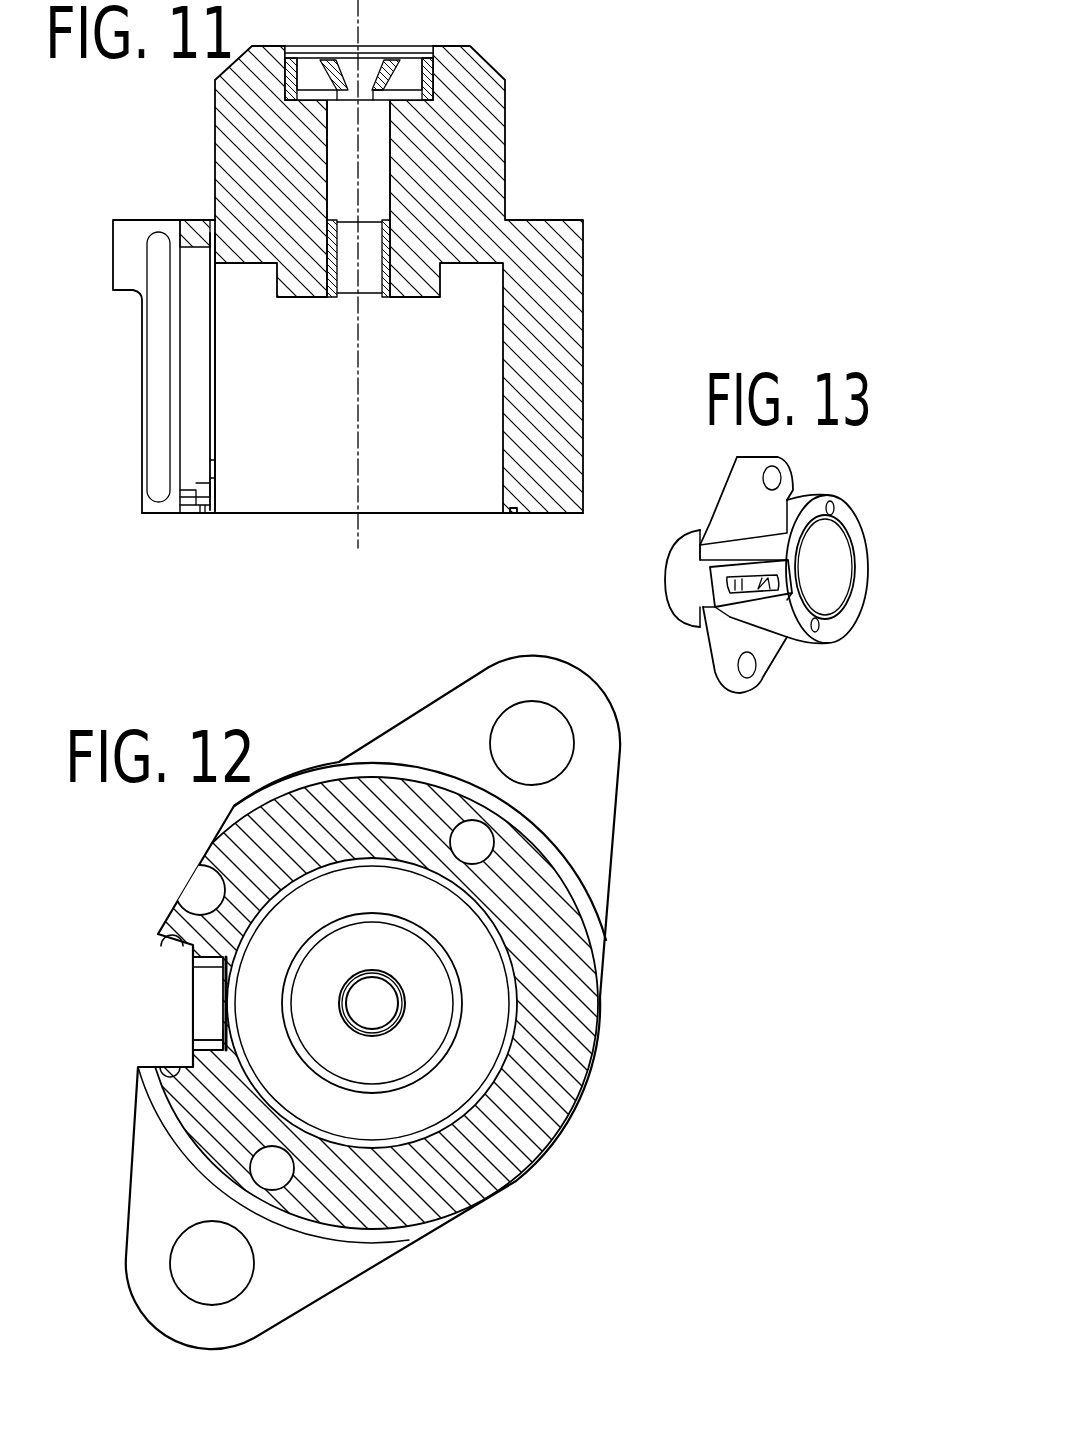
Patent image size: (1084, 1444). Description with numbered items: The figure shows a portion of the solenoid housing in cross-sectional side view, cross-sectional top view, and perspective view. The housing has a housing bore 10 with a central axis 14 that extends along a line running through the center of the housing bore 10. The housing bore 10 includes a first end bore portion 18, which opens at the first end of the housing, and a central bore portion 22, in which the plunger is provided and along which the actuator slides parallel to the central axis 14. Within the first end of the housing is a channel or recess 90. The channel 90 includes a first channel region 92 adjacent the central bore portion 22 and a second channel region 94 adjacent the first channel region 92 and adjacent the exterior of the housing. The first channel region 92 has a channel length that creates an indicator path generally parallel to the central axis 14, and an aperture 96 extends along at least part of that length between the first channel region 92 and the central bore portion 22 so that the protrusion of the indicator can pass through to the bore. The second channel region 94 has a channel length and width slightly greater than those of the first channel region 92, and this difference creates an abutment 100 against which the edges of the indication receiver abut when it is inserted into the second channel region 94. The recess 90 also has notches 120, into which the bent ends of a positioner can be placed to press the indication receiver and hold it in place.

In FIG. 12, the housing bore 10 is at (382, 1012).
In FIG. 11, the central axis 14 is at (358, 14).
In FIG. 11, the first end bore portion 18 is at (377, 125).
In FIG. 11, the central bore portion 22 is at (468, 493).
In FIG. 13, the central bore portion 22 is at (828, 585).
In FIG. 11, the channel 90 is at (120, 372).
In FIG. 12, the channel 90 is at (115, 1007).
In FIG. 13, the channel 90 is at (713, 592).
In FIG. 11, the first channel region 92 is at (197, 463).
In FIG. 12, the first channel region 92 is at (217, 1033).
In FIG. 11, the second channel region 94 is at (155, 417).
In FIG. 12, the second channel region 94 is at (177, 983).
In FIG. 11, the aperture 96 is at (219, 371).
In FIG. 12, the aperture 96 is at (236, 1000).
In FIG. 13, the aperture 96 is at (772, 573).
In FIG. 12, the abutment 100 is at (188, 955).
In FIG. 12, the notches 120 is at (182, 866).